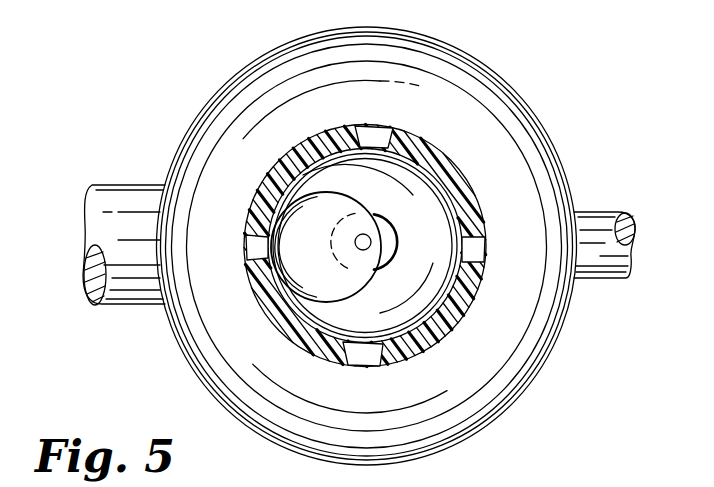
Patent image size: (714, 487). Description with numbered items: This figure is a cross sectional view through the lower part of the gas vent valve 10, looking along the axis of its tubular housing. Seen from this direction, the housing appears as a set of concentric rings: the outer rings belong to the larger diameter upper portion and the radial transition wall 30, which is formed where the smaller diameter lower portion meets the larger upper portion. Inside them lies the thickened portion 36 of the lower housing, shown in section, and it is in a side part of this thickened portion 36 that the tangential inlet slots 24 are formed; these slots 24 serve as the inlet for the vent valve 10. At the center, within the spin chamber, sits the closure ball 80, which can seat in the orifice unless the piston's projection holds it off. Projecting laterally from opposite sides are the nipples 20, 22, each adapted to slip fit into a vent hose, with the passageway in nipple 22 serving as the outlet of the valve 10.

The gas vent valve 10 is at (548, 103).
The laterally projecting nipple 20 is at (115, 192).
The laterally projecting nipple 22 is at (604, 214).
The tangential inlet slots 24 is at (383, 137).
The radial transition wall 30 is at (543, 174).
The thickened portion 36 is at (292, 328).
The closure ball 80 is at (306, 216).